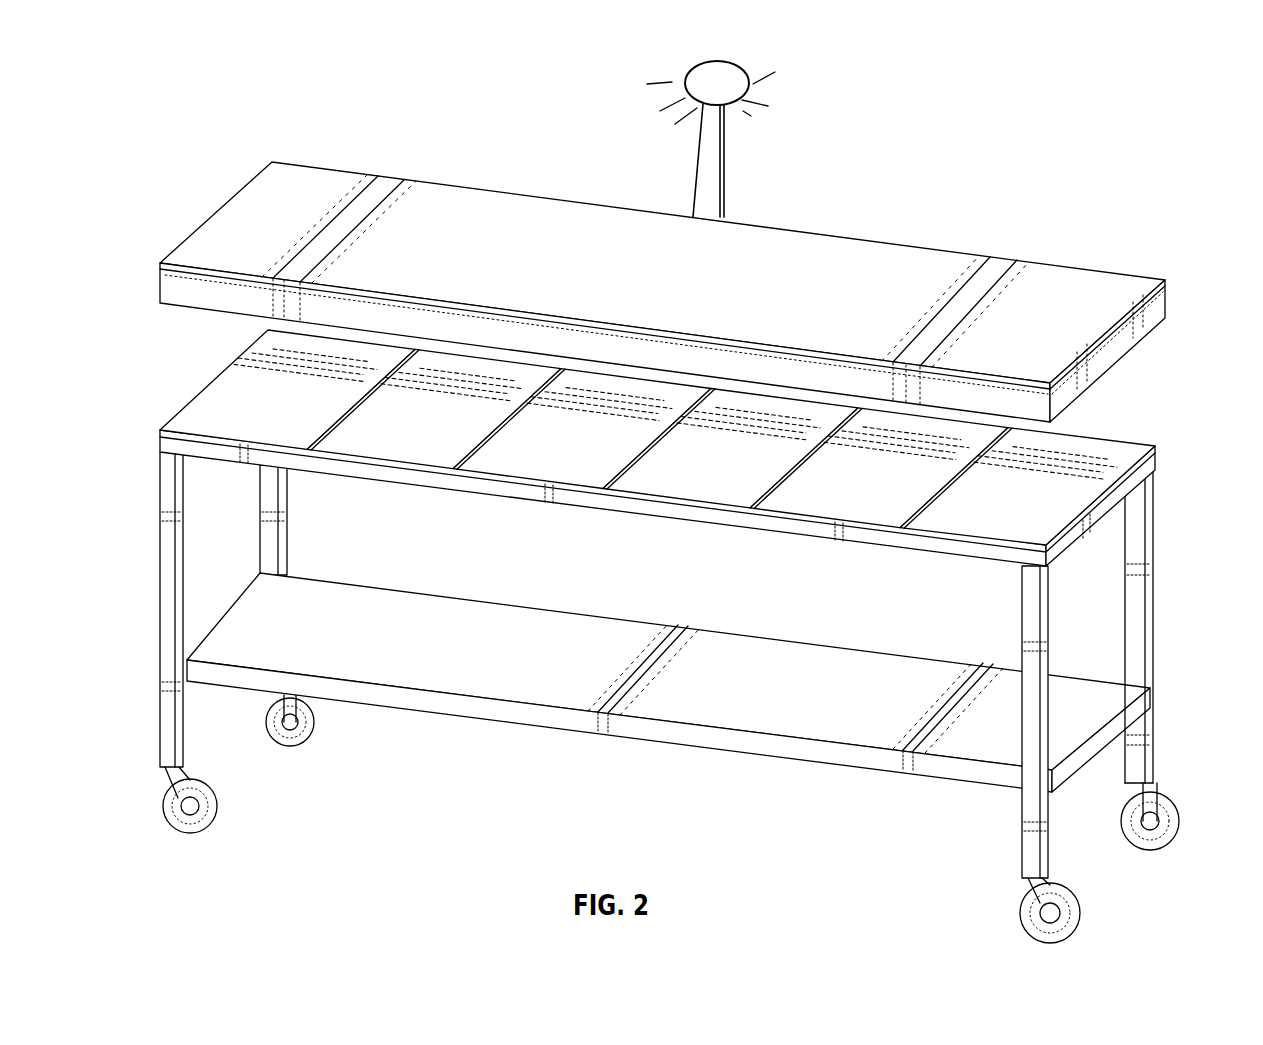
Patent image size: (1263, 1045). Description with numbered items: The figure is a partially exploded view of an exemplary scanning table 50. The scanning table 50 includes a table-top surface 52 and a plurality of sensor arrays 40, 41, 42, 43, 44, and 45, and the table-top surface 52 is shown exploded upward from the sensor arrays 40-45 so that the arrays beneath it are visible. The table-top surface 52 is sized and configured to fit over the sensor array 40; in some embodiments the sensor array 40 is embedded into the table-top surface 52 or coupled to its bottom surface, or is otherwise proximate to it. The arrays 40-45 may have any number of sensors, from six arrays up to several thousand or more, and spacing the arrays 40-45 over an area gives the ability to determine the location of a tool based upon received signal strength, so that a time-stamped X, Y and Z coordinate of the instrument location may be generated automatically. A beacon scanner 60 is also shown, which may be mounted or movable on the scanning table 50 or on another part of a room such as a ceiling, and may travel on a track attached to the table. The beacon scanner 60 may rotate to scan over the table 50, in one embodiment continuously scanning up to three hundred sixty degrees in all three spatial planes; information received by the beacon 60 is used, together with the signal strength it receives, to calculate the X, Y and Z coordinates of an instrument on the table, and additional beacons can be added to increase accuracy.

The scanning table 50 is at (184, 136).
The sensor array 40 is at (697, 636).
The sensor array 41 is at (879, 468).
The sensor array 42 is at (722, 416).
The sensor array 43 is at (546, 418).
The sensor array 44 is at (426, 377).
The sensor array 45 is at (250, 381).
The table-top surface 52 is at (1083, 281).
The beacon scanner 60 is at (723, 155).